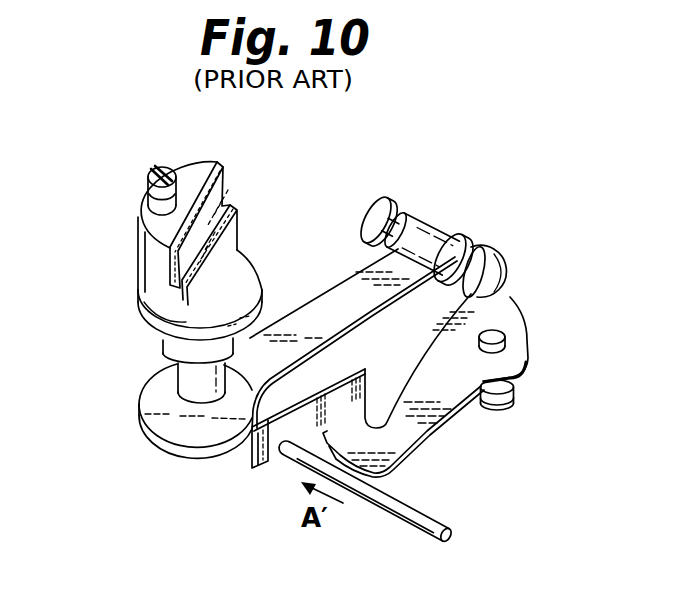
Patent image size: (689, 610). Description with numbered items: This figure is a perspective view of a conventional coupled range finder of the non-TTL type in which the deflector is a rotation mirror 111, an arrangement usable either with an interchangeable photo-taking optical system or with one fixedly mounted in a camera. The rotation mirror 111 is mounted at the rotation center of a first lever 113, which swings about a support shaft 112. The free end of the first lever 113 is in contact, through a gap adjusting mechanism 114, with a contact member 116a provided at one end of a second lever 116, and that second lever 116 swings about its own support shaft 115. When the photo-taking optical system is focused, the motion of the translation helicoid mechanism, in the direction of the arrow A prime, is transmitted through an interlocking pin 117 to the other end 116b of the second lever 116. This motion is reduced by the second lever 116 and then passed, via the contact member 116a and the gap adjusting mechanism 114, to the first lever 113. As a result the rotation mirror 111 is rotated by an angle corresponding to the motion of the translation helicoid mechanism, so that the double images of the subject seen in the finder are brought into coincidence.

The rotation mirror 111 is at (192, 167).
The support shaft 112 is at (140, 408).
The first lever 113 is at (350, 292).
The gap adjusting mechanism 114 is at (399, 198).
The support shaft 115 is at (500, 326).
The second lever 116 is at (446, 394).
The contact member 116a is at (505, 266).
The other end of the second lever 116b is at (247, 458).
The interlocking pin 117 is at (396, 502).